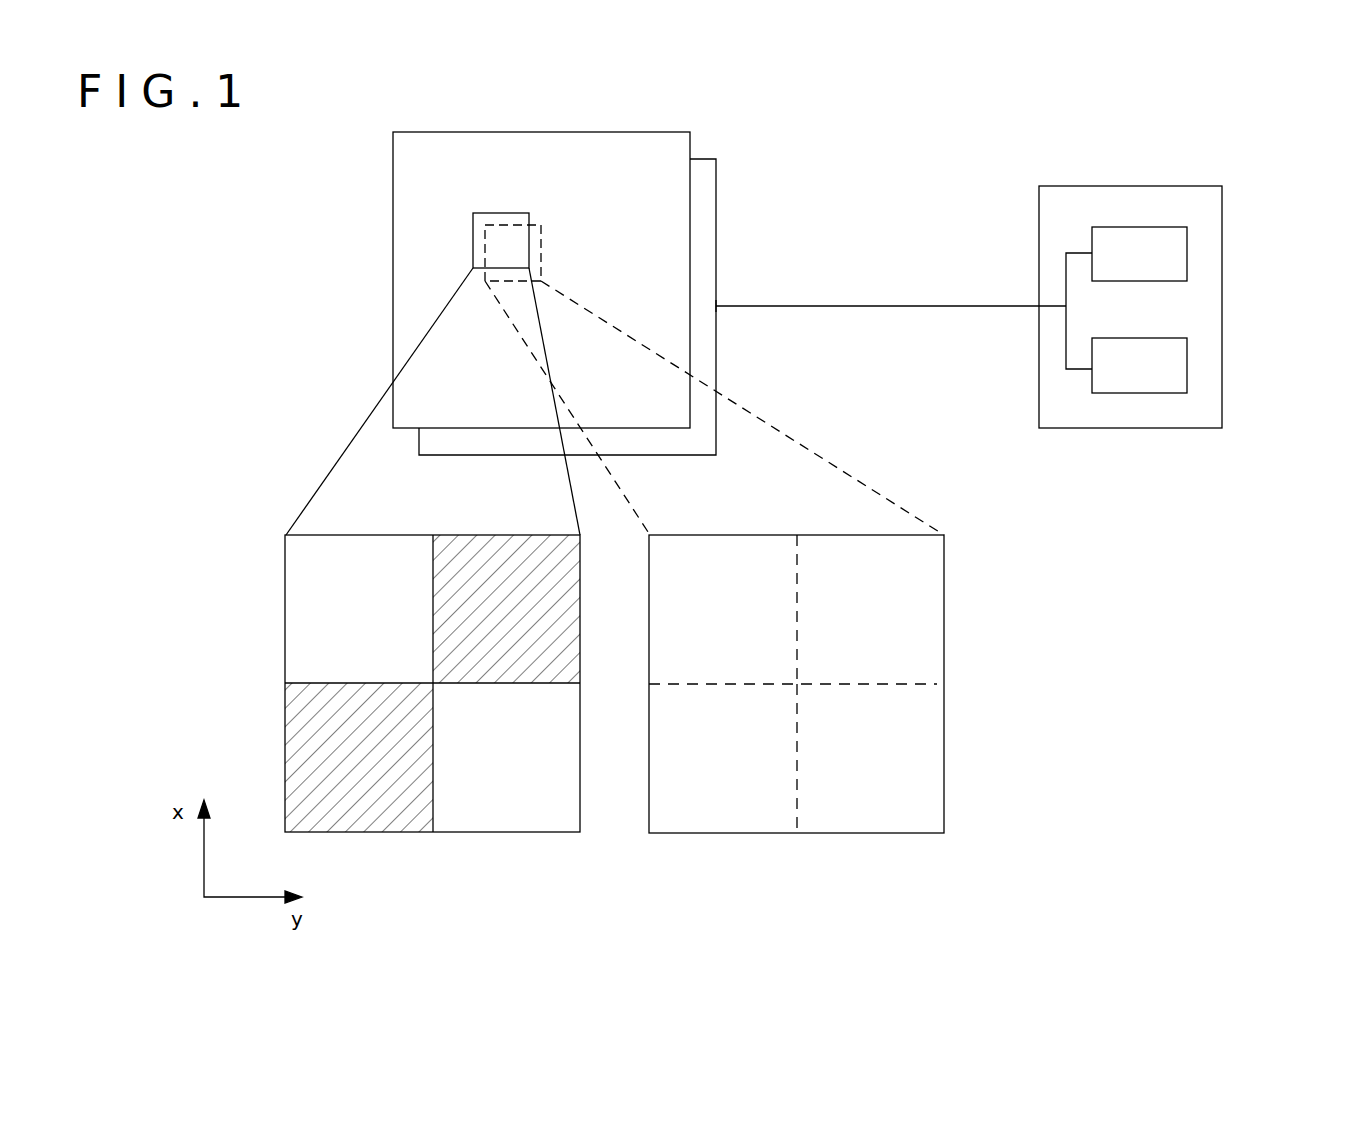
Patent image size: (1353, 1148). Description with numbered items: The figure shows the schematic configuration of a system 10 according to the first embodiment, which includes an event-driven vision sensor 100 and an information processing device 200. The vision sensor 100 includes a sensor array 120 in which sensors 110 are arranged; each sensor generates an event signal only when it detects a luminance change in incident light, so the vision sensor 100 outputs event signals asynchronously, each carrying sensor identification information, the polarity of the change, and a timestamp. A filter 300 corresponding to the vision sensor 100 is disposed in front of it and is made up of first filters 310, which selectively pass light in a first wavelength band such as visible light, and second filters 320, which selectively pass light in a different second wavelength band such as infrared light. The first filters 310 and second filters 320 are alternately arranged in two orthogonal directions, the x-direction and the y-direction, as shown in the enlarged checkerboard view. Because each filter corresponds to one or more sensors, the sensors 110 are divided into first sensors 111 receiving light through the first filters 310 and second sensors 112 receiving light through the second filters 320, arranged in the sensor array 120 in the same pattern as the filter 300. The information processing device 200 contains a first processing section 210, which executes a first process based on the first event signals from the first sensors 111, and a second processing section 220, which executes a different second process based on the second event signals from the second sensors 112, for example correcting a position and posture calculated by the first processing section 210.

The system 10 is at (903, 164).
The vision sensor 100 is at (716, 240).
The sensors 110 is at (1030, 630).
The first sensors 111 is at (920, 767).
The second sensors 112 is at (918, 648).
The sensor array 120 is at (712, 281).
The information processing device 200 is at (1222, 198).
The first processing section 210 is at (1187, 258).
The second processing section 220 is at (1187, 368).
The filter 300 is at (393, 227).
The first filters 310 is at (386, 656).
The second filters 320 is at (533, 656).